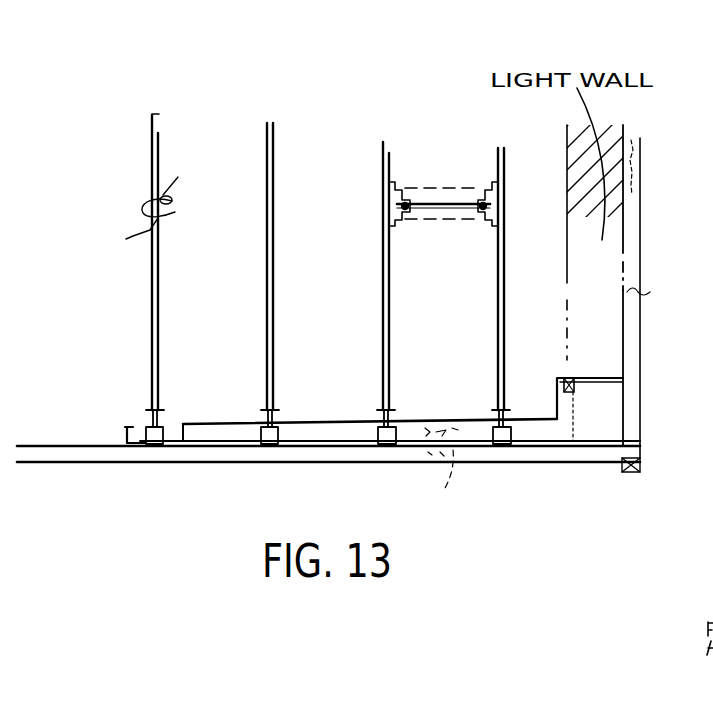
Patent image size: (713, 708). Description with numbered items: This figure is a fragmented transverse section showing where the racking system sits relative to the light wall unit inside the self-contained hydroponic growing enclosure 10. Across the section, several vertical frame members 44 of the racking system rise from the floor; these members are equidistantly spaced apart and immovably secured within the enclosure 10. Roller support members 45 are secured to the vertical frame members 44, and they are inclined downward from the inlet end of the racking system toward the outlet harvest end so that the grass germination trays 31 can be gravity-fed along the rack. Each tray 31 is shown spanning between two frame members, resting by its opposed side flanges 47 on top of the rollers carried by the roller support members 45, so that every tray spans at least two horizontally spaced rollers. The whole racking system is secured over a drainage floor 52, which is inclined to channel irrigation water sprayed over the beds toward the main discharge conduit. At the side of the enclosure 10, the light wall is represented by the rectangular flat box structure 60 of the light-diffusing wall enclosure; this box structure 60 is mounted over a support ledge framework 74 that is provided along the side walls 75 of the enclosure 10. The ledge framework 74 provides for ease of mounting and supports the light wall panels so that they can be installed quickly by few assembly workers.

The self-contained hydroponic growing enclosure 10 is at (641, 351).
The grass germination trays 31 is at (468, 186).
The vertical frame members 44 is at (383, 288).
The roller support members 45 is at (397, 216).
The opposed side flanges 47 is at (486, 218).
The drainage floor 52 is at (350, 421).
The rectangular flat box structure 60 is at (624, 194).
The support ledge framework 74 is at (601, 386).
The side walls 75 is at (624, 259).